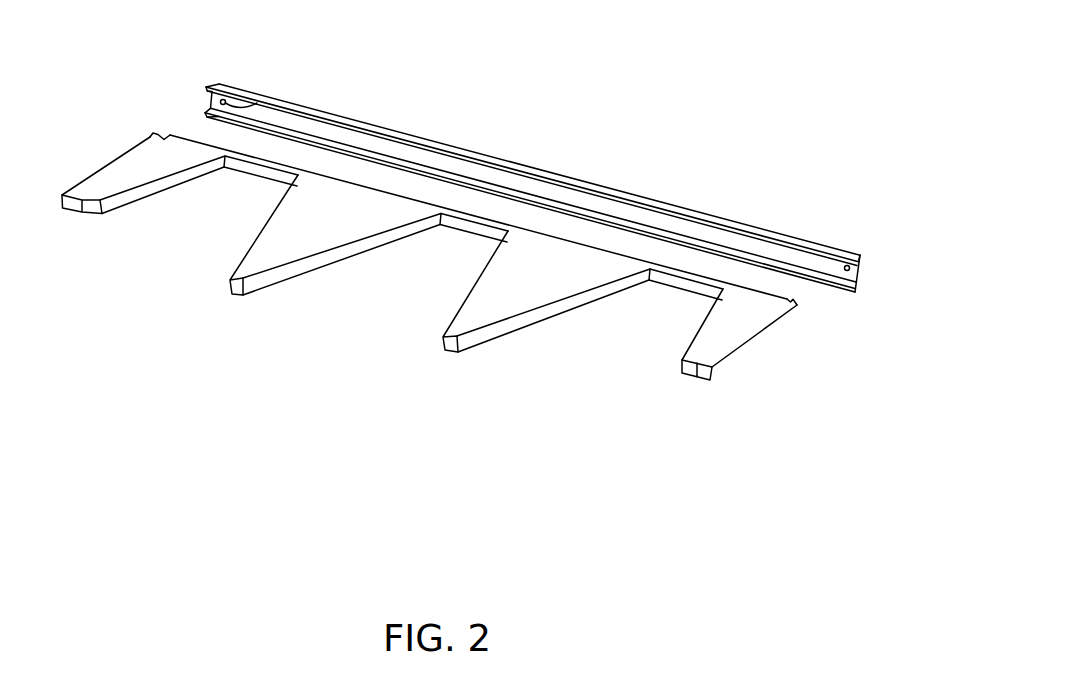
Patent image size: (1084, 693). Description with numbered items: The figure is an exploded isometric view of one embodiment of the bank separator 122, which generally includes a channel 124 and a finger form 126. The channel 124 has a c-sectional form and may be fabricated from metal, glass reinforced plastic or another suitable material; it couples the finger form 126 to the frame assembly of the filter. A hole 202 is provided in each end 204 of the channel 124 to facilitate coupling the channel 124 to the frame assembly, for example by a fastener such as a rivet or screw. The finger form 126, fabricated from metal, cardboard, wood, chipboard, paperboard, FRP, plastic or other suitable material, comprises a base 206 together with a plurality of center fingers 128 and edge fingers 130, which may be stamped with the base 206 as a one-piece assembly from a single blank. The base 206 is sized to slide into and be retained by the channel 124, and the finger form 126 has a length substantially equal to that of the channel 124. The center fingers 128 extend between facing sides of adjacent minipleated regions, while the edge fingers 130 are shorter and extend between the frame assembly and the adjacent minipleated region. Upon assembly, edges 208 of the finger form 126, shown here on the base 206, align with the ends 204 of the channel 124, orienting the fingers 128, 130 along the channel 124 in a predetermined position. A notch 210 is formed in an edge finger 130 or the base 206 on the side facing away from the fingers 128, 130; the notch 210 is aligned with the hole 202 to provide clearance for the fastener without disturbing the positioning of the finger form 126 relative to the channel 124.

The bank separator 122 is at (496, 228).
The channel 124 is at (556, 160).
The finger form 126 is at (464, 264).
The center fingers 128 is at (268, 261).
The edge fingers 130 is at (113, 185).
The hole 202 is at (257, 103).
The end 204 is at (212, 86).
The base 206 is at (678, 283).
The edge 208 is at (447, 260).
The notch 210 is at (801, 296).